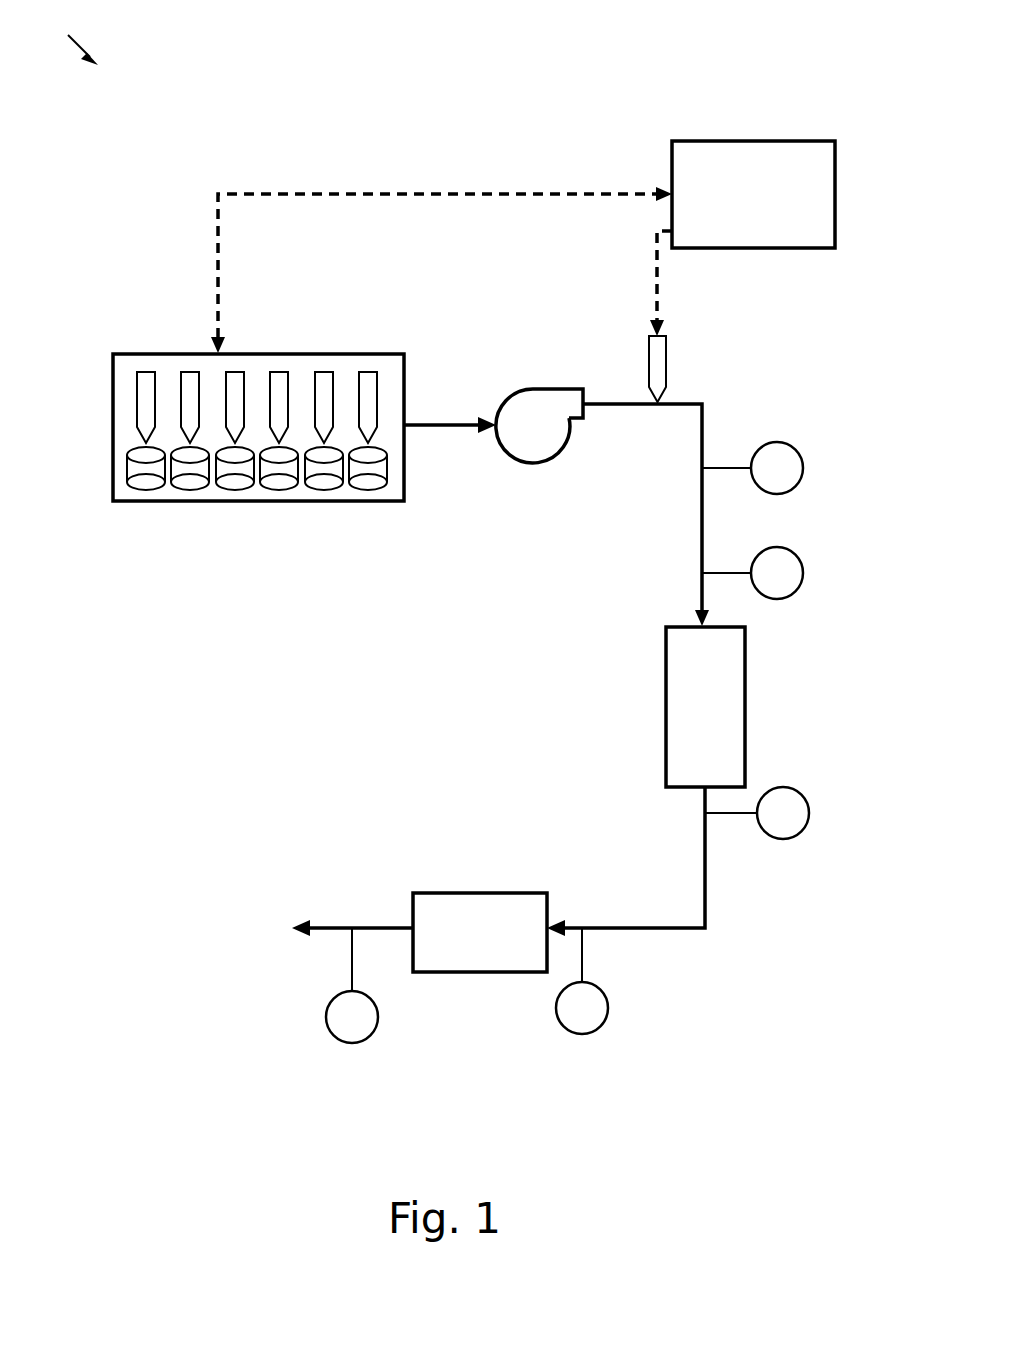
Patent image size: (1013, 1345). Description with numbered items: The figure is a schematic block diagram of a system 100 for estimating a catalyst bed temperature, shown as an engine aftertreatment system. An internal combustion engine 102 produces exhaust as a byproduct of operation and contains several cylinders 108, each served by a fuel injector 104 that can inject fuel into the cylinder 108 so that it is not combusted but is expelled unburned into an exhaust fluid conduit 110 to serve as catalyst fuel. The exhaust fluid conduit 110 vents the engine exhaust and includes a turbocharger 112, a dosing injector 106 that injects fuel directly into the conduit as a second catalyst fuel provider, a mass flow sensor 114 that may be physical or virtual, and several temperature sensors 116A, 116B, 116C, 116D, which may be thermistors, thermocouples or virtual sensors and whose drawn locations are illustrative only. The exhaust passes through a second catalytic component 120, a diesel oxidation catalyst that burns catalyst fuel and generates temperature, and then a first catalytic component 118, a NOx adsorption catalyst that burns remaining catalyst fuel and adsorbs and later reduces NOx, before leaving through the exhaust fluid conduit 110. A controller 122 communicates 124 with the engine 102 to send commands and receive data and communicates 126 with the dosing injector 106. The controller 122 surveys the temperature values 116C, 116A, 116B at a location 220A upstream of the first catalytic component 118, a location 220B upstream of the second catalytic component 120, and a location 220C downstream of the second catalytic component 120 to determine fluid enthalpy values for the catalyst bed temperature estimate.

The system 100 is at (61, 35).
The internal combustion engine 102 is at (355, 353).
The fuel injector 104 is at (137, 392).
The dosing injector 106 is at (667, 355).
The cylinder 108 is at (137, 489).
The exhaust fluid conduit 110 is at (448, 432).
The turbocharger 112 is at (528, 388).
The mass flow sensor 114 is at (803, 462).
The temperature sensor 116A is at (803, 568).
The temperature sensor 116B is at (809, 808).
The temperature sensor 116C is at (608, 1000).
The temperature sensor 116D is at (378, 1010).
The first catalytic component 118 is at (445, 892).
The second catalytic component 120 is at (745, 702).
The controller 122 is at (783, 140).
The communication 124 is at (286, 192).
The communication 126 is at (655, 270).
The upstream location 220A is at (585, 926).
The upstream location 220B is at (703, 810).
The downstream location 220C is at (697, 603).